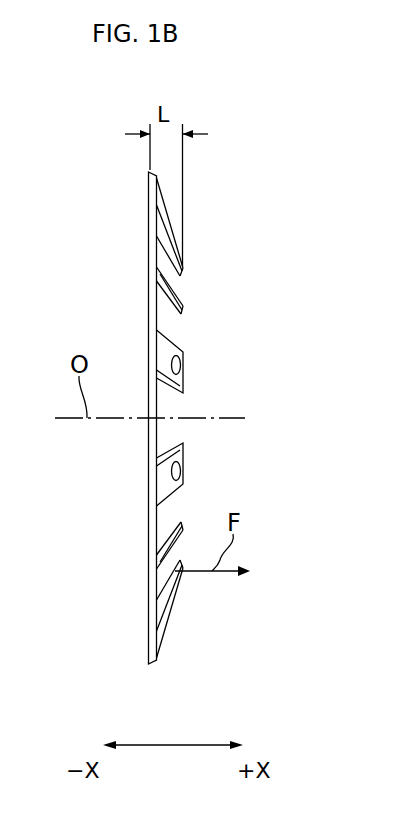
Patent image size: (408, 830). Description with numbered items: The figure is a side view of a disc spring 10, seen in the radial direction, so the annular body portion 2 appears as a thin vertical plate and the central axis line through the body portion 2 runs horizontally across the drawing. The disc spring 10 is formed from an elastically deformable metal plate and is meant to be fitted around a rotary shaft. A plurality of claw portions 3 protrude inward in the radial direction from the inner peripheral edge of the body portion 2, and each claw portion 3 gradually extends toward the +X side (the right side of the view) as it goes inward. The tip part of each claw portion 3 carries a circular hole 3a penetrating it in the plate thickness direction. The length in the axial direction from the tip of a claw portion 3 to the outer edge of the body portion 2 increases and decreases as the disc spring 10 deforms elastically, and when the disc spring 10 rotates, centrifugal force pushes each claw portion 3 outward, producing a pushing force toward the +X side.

The disc spring 10 is at (180, 393).
The annular body portion 2 is at (148, 210).
The claw portion 3 is at (209, 359).
The circular hole 3a is at (178, 371).